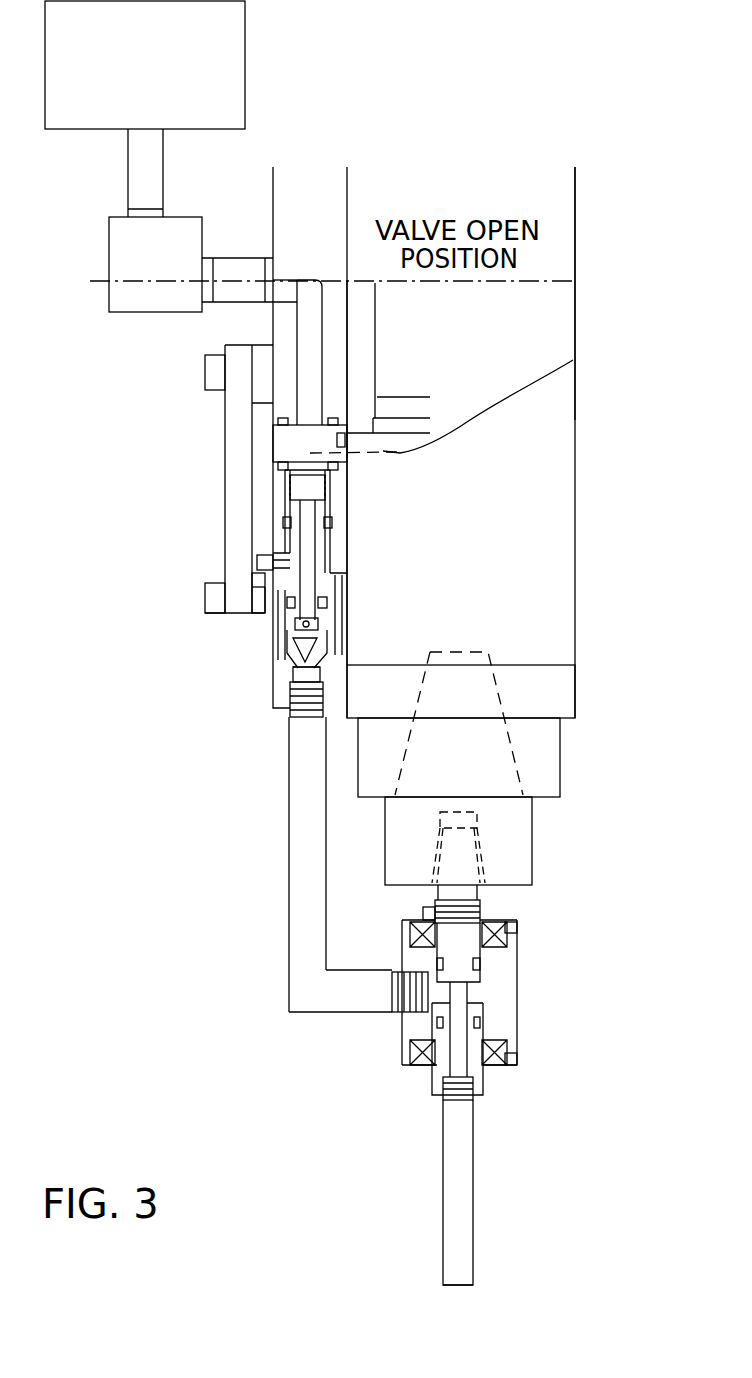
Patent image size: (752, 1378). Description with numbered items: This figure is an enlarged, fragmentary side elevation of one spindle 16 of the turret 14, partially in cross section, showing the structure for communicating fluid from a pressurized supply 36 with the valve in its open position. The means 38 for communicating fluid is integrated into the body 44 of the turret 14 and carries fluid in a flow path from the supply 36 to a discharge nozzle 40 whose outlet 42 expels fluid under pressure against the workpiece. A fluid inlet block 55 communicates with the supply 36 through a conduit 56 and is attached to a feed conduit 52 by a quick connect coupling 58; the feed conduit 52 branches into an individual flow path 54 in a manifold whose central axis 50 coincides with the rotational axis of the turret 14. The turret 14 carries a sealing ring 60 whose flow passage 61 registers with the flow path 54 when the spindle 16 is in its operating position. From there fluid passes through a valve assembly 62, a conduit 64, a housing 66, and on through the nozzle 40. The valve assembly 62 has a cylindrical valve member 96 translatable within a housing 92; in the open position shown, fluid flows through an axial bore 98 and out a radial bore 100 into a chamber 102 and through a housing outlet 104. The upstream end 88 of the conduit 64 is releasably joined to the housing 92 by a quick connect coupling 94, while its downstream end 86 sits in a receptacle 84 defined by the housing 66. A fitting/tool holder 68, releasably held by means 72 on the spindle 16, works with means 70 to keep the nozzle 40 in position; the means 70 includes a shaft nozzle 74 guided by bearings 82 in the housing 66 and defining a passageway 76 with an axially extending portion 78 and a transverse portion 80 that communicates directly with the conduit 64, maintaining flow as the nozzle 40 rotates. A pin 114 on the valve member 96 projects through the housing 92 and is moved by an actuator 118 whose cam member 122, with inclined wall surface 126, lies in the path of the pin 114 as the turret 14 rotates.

The turret 14 is at (575, 500).
The spindle 16 is at (577, 696).
The pressurized supply 36 is at (160, 116).
The means for communicating fluid 38 is at (181, 482).
The discharge nozzle 40 is at (473, 1213).
The outlet 42 is at (443, 1286).
The body of the turret 44 is at (577, 397).
The central axis 50 is at (243, 277).
The feed conduit 52 is at (270, 303).
The flow path 54 is at (307, 335).
The fluid inlet block 55 is at (109, 243).
The conduit 56 is at (128, 170).
The quick connect coupling 58 is at (220, 252).
The sealing ring 60 is at (290, 447).
The flow passage 61 is at (403, 455).
The valve assembly 62 is at (268, 656).
The conduit 64 is at (289, 1012).
The housing 66 is at (518, 1007).
The fitting/tool holder 68 is at (532, 850).
The means cooperating between fitting/tool holder and nozzle 70 is at (492, 970).
The means for releasably holding 72 is at (562, 747).
The shaft nozzle 74 is at (460, 945).
The passageway 76 is at (463, 1047).
The axially extending portion 78 is at (460, 1030).
The transverse portion 80 is at (437, 1000).
The bearing 82 is at (507, 934).
The receptacle 84 is at (410, 987).
The downstream end 86 is at (380, 1002).
The upstream end 88 is at (288, 760).
The housing 92 is at (276, 712).
The quick connect coupling 94 is at (318, 680).
The cylindrical valve member 96 is at (323, 557).
The axial bore 98 is at (303, 520).
The radial bore 100 is at (315, 623).
The chamber 102 is at (290, 625).
The housing outlet 104 is at (323, 697).
The pin 114 is at (257, 556).
The actuator 118 is at (231, 411).
The cam member 122 is at (258, 608).
The inclined wall surface 126 is at (253, 578).